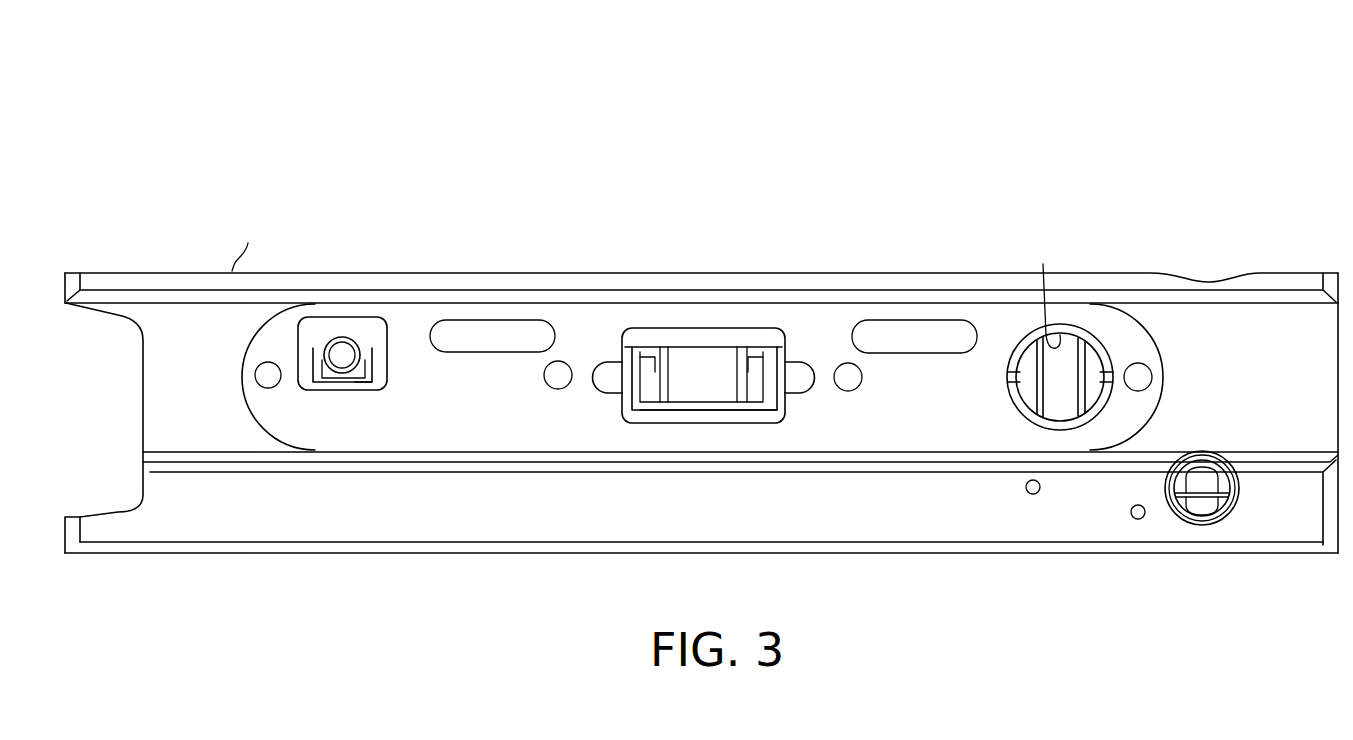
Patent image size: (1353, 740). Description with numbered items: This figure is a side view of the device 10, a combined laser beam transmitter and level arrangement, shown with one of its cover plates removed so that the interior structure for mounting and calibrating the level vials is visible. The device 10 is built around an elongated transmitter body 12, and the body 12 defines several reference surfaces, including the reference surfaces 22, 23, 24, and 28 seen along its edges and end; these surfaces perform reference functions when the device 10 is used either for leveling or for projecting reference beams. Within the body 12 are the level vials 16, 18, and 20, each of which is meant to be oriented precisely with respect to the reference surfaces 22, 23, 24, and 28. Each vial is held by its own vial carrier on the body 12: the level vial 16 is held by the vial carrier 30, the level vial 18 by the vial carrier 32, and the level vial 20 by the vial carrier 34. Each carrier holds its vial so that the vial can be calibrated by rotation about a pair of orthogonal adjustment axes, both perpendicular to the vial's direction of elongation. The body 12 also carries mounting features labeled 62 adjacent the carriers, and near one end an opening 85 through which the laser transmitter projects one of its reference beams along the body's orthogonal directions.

The device 10 is at (880, 187).
The transmitter body 12 is at (163, 386).
The level vial 16 is at (1073, 356).
The level vial 18 is at (703, 362).
The level vial 20 is at (340, 362).
The reference surface 22 is at (417, 555).
The reference surface 23 is at (121, 284).
The reference surface 24 is at (256, 542).
The reference surface 28 is at (1305, 271).
The vial carrier 30 is at (1030, 388).
The vial carrier 32 is at (634, 406).
The vial carrier 34 is at (368, 371).
The tab 62 is at (355, 388).
The opening 85 is at (1220, 483).